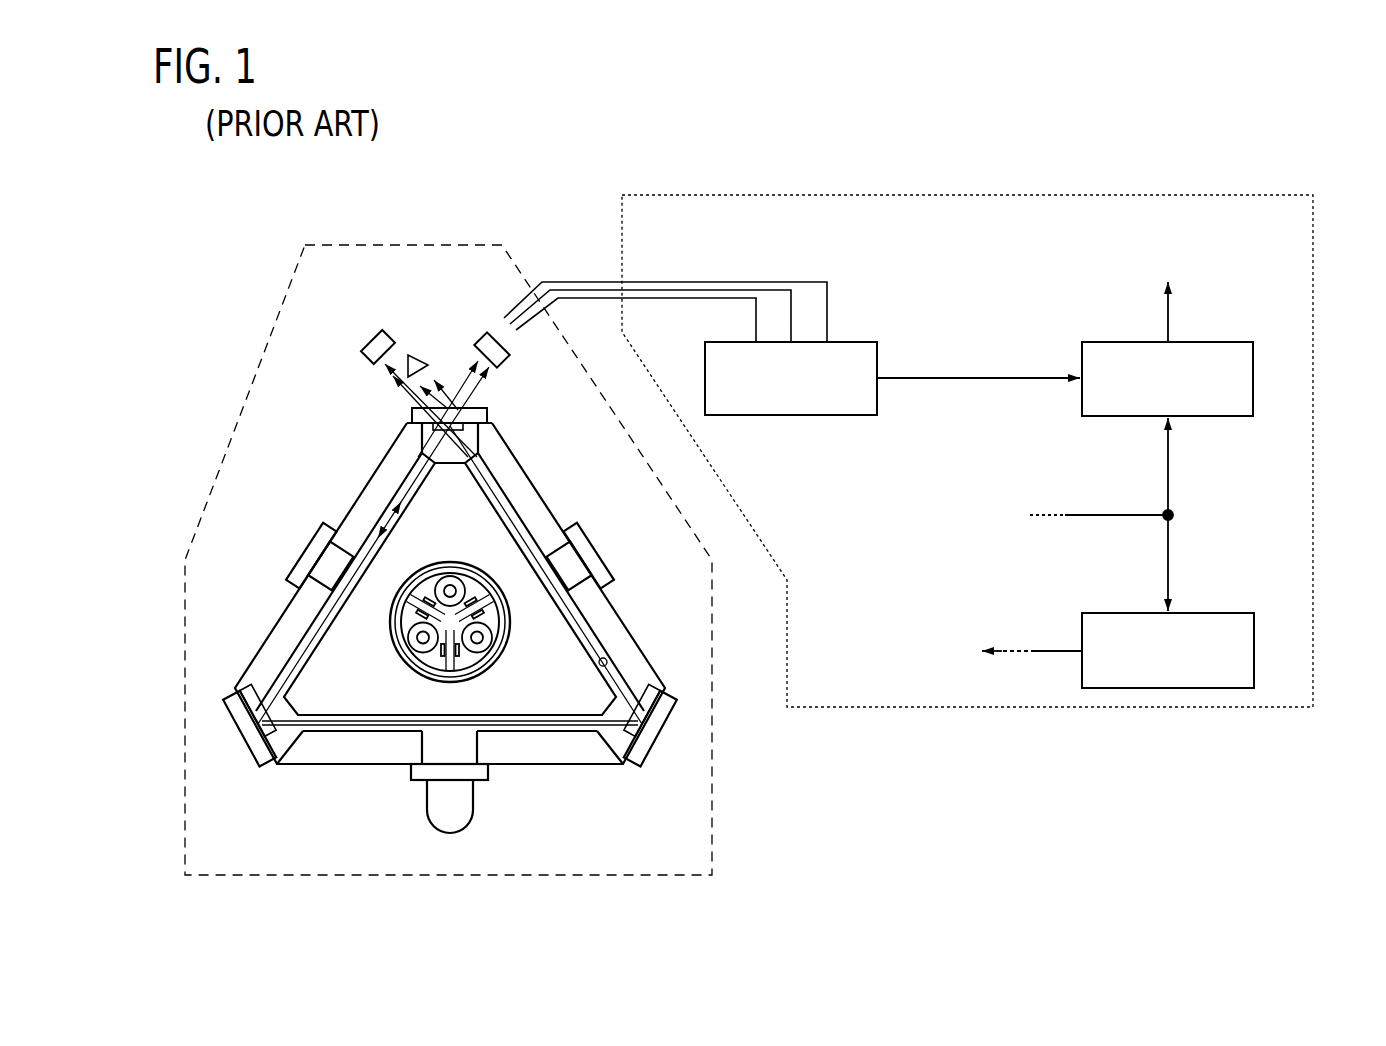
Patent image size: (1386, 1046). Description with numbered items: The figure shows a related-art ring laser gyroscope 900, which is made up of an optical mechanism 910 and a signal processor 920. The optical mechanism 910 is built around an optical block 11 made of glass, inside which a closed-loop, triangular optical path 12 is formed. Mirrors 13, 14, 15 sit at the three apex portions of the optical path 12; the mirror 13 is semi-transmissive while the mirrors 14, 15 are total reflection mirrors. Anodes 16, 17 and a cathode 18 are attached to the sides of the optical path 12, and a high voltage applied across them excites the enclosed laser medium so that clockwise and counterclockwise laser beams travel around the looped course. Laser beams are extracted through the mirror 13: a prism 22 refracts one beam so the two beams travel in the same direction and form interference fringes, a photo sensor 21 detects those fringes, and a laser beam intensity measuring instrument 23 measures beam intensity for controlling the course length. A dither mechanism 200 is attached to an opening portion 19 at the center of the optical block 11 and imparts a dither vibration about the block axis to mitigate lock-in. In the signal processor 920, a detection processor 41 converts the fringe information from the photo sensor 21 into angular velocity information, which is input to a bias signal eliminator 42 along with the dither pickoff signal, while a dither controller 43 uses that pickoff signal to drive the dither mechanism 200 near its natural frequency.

The ring laser gyroscope 900 is at (226, 243).
The optical mechanism 910 is at (712, 780).
The signal processor 920 is at (1148, 708).
The optical block 11 is at (536, 490).
The optical path 12 is at (607, 659).
The mirror 13 is at (460, 432).
The mirror 14 is at (655, 690).
The mirror 15 is at (256, 708).
The anode 16 is at (300, 553).
The anode 17 is at (597, 554).
The cathode 18 is at (428, 808).
The opening portion 19 is at (390, 627).
The dither mechanism 200 is at (470, 665).
The photo sensor 21 is at (508, 354).
The prism 22 is at (425, 360).
The laser beam intensity measuring instrument 23 is at (364, 337).
The detection processor 41 is at (796, 418).
The bias signal eliminator 42 is at (1222, 342).
The dither controller 43 is at (1222, 613).